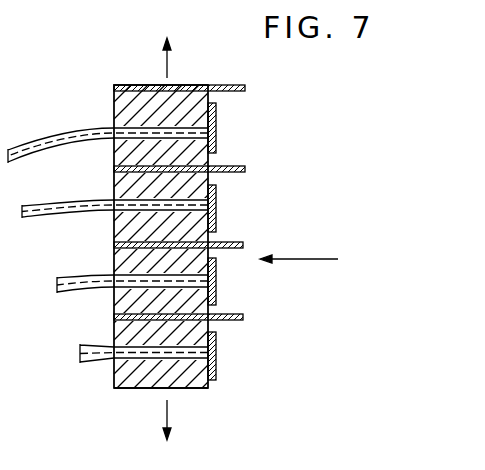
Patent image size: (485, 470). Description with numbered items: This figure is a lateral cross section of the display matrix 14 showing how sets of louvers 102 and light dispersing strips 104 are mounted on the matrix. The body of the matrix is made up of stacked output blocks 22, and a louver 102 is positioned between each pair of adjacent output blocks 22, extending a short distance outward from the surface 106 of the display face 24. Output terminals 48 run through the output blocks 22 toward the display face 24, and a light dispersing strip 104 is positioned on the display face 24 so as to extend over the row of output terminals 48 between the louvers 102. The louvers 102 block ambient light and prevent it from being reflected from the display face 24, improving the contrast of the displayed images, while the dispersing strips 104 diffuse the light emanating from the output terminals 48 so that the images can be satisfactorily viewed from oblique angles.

The display matrix 14 is at (143, 389).
The output blocks 22 is at (114, 110).
The display face 24 is at (312, 262).
The output terminals 48 is at (37, 140).
The louvers 102 is at (245, 88).
The light dispersing strips 104 is at (217, 122).
The surface 106 is at (208, 386).